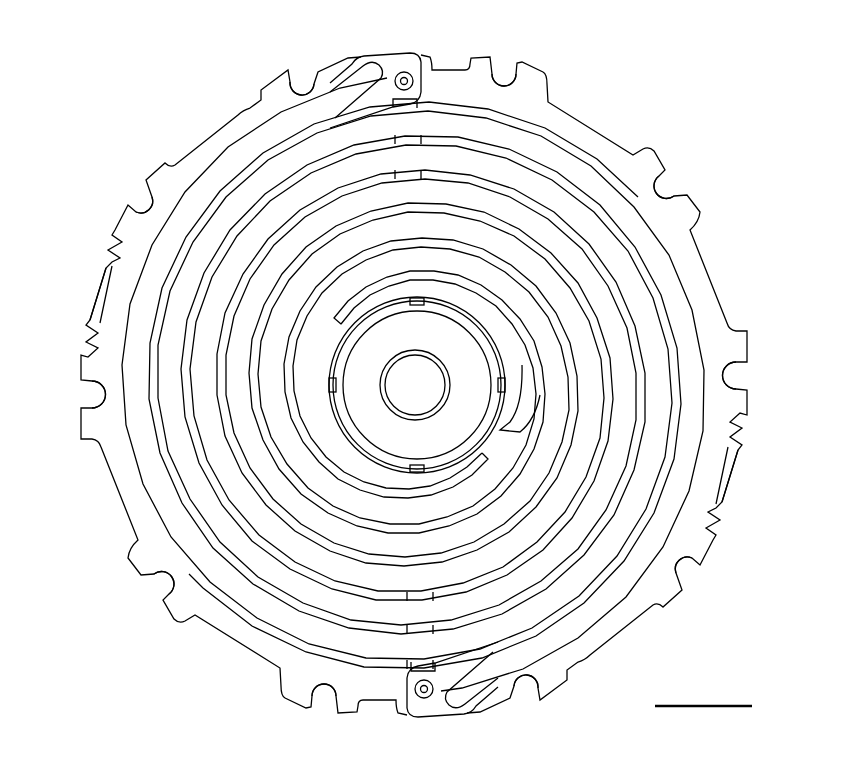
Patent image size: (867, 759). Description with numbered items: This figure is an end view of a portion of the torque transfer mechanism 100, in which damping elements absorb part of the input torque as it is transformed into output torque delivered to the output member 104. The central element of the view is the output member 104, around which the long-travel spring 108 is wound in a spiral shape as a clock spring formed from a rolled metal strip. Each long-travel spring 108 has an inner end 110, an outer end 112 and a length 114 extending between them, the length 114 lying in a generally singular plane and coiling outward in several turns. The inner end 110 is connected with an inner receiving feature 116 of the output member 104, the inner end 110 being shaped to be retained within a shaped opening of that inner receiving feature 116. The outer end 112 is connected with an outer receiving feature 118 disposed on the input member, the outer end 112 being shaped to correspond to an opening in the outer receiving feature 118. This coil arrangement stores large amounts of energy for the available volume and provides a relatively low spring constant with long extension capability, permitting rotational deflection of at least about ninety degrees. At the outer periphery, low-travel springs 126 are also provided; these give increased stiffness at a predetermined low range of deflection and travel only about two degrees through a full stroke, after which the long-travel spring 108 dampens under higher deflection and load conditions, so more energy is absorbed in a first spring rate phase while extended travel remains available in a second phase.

The torque transfer mechanism 100 is at (176, 124).
The output member 104 is at (372, 362).
The long-travel spring 108 is at (628, 278).
The inner end 110 is at (492, 457).
The outer end 112 is at (372, 68).
The length 114 is at (152, 483).
The inner receiving feature 116 is at (497, 432).
The outer receiving feature 118 is at (345, 90).
The low-travel spring 126 is at (100, 295).